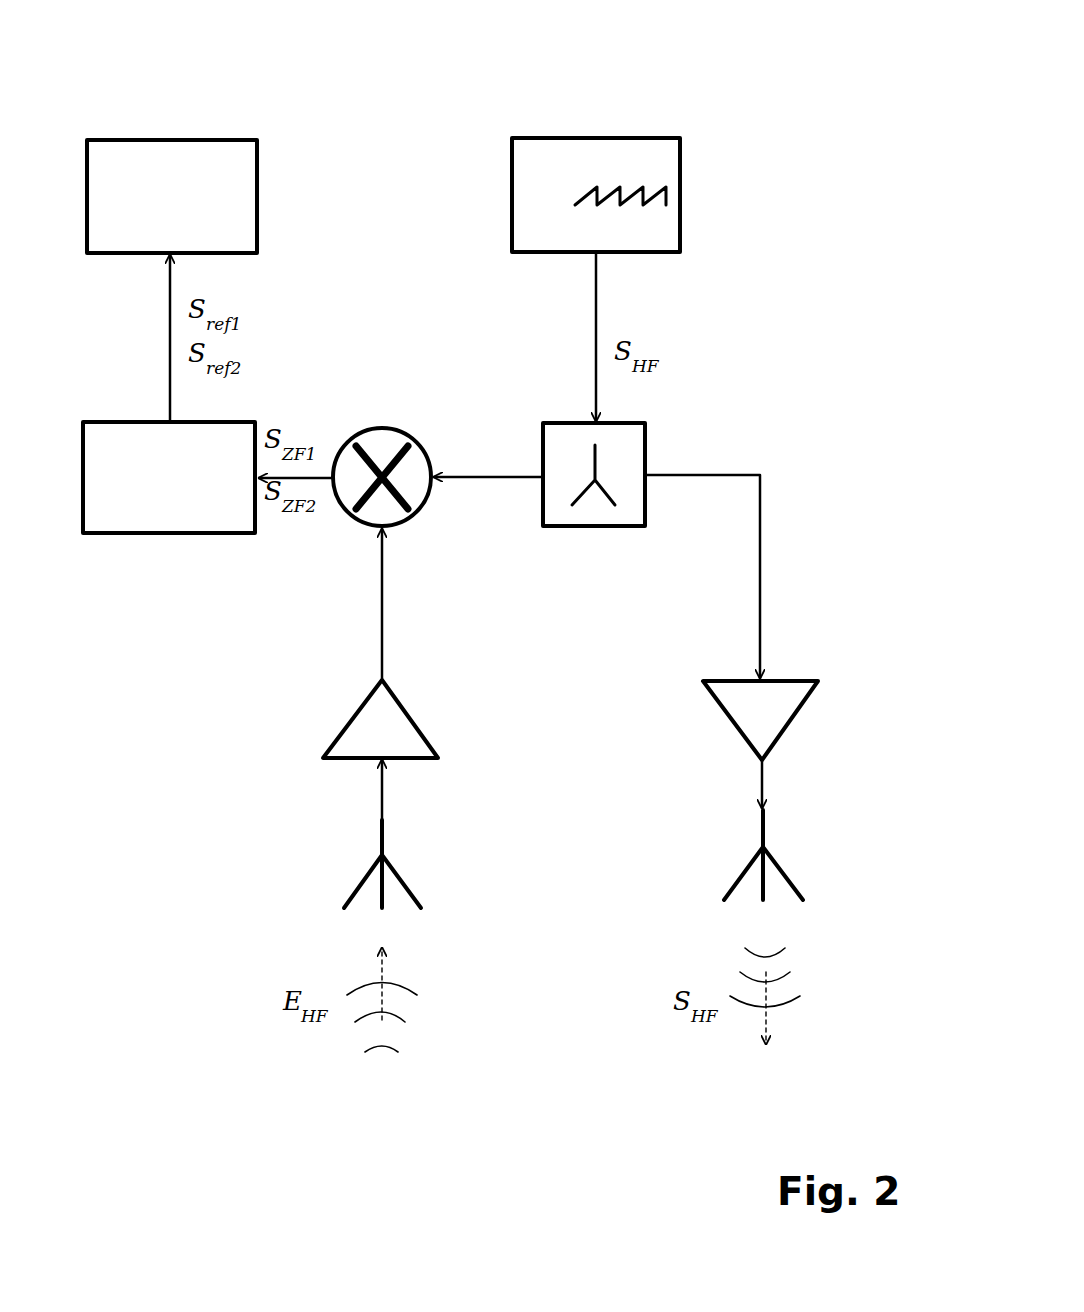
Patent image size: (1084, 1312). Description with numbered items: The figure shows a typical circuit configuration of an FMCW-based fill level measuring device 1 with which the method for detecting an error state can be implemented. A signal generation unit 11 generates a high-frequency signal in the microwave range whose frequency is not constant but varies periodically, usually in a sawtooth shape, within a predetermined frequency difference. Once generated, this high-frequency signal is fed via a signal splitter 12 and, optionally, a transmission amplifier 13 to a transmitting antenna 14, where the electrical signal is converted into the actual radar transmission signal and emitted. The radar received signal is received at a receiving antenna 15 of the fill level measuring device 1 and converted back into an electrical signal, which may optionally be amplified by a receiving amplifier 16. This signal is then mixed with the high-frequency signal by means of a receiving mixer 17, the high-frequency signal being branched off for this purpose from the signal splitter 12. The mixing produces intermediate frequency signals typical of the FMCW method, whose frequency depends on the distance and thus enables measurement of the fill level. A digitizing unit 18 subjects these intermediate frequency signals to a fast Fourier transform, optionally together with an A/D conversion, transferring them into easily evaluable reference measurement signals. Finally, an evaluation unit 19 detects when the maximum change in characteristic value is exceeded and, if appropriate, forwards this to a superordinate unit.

The fill level measuring device 1 is at (788, 207).
The signal generation unit 11 is at (660, 253).
The signal splitter 12 is at (595, 527).
The transmission amplifier 13 is at (782, 735).
The transmitting antenna 14 is at (764, 832).
The receiving antenna 15 is at (381, 852).
The receiving amplifier 16 is at (405, 718).
The receiving mixer 17 is at (383, 427).
The digitizing unit 18 is at (170, 534).
The evaluation unit 19 is at (132, 254).